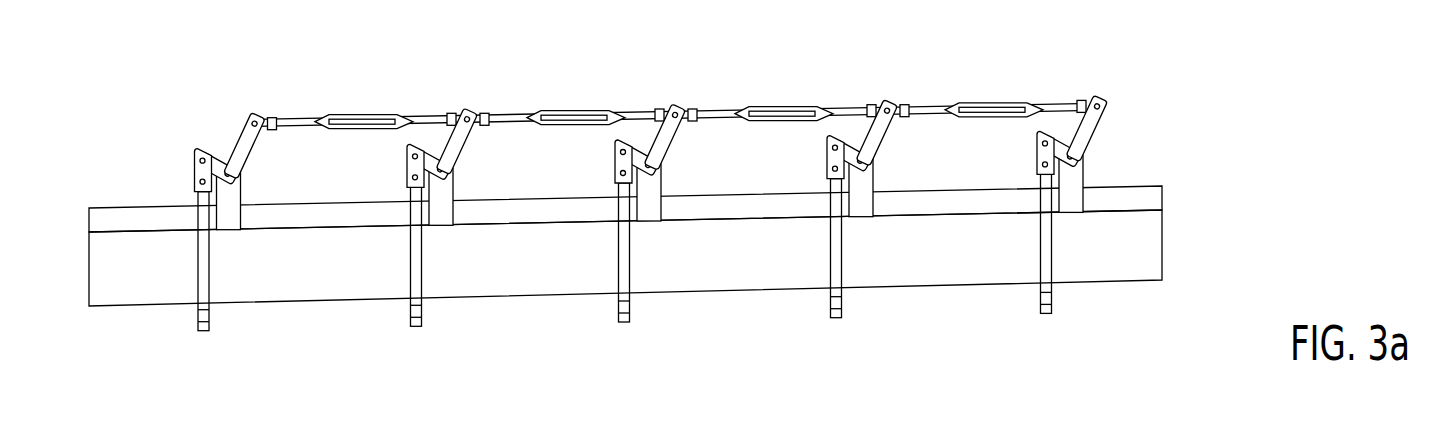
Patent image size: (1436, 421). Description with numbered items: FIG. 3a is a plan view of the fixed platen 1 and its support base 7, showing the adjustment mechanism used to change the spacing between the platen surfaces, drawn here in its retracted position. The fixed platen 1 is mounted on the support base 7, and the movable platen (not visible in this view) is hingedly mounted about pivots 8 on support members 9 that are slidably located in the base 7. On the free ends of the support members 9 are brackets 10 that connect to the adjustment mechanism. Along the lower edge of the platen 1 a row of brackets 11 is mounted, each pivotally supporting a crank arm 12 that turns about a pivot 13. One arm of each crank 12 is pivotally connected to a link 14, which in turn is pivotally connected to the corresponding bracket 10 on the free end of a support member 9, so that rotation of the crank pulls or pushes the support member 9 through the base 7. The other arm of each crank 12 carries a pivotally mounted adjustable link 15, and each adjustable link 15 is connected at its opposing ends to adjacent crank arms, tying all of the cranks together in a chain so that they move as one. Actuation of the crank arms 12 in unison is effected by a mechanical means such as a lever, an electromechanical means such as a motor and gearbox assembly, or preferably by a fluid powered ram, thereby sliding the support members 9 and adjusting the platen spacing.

The fixed platen 1 is at (1148, 198).
The support base 7 is at (1137, 263).
The pivots 8 is at (1043, 289).
The support members 9 is at (1053, 290).
The brackets 10 is at (1040, 183).
The brackets 11 is at (1078, 175).
The crank arms 12 is at (1104, 124).
The pivots 13 is at (1090, 146).
The links 14 is at (1038, 157).
The adjustable links 15 is at (802, 105).